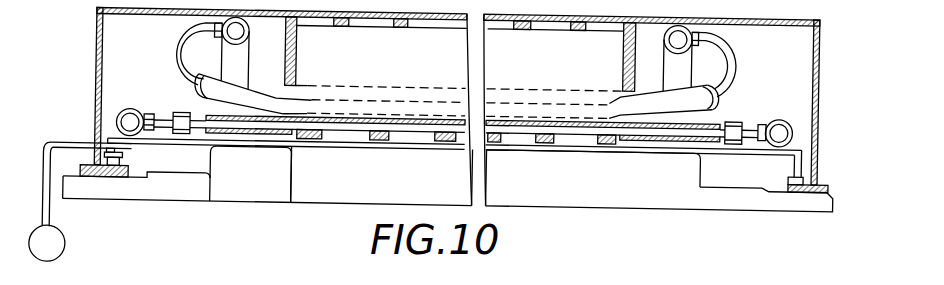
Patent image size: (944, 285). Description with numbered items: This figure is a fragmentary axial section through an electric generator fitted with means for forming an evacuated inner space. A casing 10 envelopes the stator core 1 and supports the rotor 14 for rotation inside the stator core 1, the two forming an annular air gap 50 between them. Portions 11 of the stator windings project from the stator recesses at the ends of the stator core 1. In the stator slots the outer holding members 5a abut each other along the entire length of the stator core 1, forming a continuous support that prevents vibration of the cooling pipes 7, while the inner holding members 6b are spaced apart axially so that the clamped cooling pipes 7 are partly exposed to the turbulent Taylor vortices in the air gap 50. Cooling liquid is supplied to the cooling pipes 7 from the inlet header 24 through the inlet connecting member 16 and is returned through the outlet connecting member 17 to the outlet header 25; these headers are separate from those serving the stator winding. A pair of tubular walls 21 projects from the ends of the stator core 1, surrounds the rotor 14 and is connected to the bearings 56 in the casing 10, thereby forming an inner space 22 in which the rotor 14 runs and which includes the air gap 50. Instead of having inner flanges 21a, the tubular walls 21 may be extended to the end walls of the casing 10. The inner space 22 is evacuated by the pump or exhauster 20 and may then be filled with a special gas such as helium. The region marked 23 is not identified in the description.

The stator core 1 is at (354, 49).
The outer holding members 5a is at (439, 111).
The inner holding members 6b is at (547, 135).
The cooling pipes 7 is at (355, 127).
The casing 10 is at (96, 68).
The stator winding portions 11 is at (286, 58).
The rotor 14 is at (752, 200).
The inlet connecting member 16 is at (738, 106).
The outlet connecting member 17 is at (184, 110).
The pump or exhauster 20 is at (59, 242).
The tubular walls 21 is at (164, 144).
The inner flanges 21a is at (99, 133).
The inner space 22 is at (741, 166).
The chamber 23 is at (796, 40).
The inlet header 24 is at (804, 88).
The outlet header 25 is at (129, 106).
The annular gap 50 is at (585, 142).
The bearings 56 is at (829, 178).